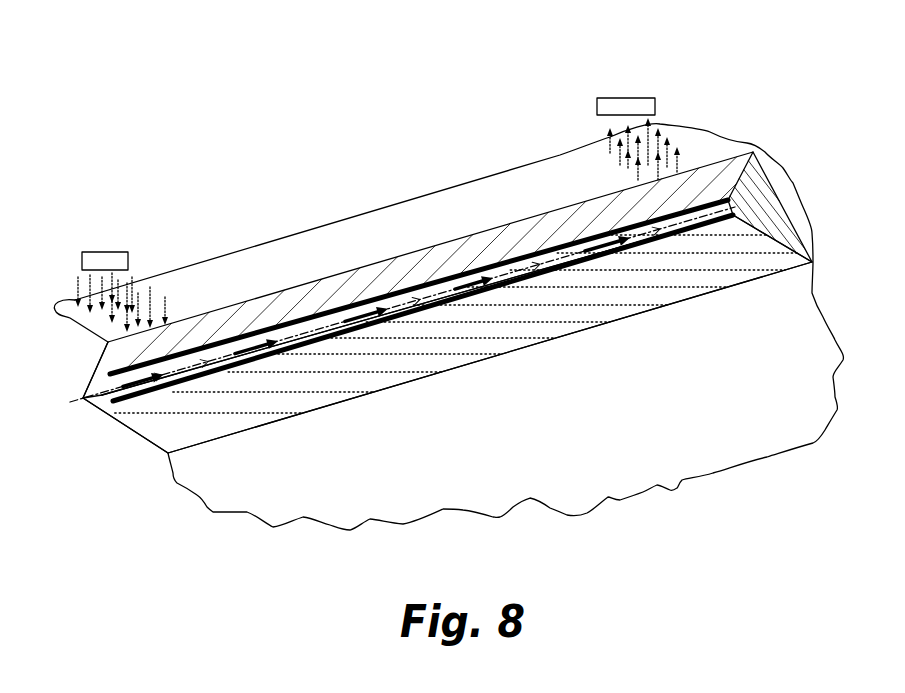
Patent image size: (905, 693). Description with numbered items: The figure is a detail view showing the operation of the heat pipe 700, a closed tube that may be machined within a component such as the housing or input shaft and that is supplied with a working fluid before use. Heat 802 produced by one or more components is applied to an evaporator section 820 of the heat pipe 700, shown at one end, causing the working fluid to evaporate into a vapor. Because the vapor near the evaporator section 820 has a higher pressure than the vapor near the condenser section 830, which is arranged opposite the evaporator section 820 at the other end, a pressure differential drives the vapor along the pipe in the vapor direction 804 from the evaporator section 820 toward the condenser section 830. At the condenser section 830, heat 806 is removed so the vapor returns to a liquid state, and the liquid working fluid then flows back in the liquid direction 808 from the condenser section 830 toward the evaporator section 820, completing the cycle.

The heat pipe 700 is at (726, 110).
The heat 802 is at (108, 250).
The vapor direction 804 is at (473, 282).
The heat 806 is at (623, 98).
The liquid direction 808 is at (308, 340).
The evaporator section 820 is at (257, 402).
The condenser section 830 is at (742, 248).